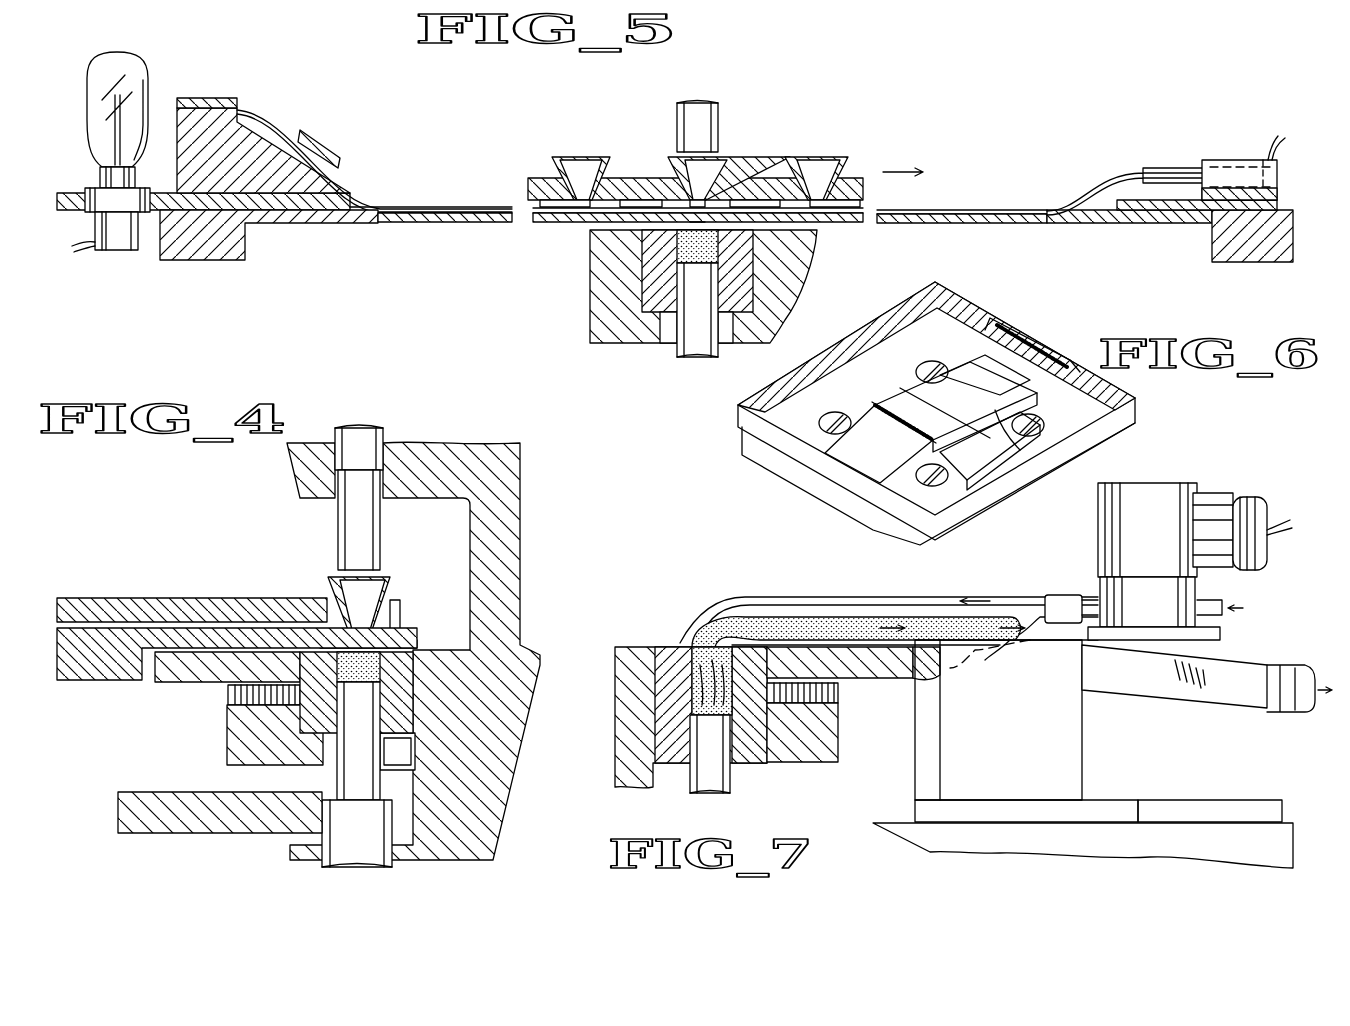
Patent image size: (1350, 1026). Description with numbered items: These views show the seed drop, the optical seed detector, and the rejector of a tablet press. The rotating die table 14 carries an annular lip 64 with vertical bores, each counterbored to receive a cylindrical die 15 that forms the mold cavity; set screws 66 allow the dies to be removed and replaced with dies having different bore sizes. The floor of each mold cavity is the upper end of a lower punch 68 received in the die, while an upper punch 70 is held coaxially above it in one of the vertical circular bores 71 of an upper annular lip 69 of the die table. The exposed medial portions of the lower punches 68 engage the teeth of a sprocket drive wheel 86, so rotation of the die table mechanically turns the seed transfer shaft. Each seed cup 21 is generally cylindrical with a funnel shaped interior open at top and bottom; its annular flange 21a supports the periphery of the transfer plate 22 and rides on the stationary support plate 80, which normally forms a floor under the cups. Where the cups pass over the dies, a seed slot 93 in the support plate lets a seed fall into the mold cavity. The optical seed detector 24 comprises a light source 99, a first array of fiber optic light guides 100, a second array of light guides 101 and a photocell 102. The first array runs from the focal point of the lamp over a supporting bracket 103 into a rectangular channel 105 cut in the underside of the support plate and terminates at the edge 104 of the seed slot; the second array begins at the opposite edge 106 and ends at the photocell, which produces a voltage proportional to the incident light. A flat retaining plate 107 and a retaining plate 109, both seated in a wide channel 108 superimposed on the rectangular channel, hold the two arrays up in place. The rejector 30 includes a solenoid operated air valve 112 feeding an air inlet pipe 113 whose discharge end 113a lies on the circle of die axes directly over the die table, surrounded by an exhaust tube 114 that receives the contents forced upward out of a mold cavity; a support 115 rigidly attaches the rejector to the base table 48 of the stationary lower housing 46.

In FIG. 5, the die table 14 is at (598, 305).
In FIG. 4, the die table 14 is at (235, 728).
In FIG. 7, the die table 14 is at (838, 748).
In FIG. 5, the cylindrical die 15 is at (645, 285).
In FIG. 4, the cylindrical die 15 is at (413, 712).
In FIG. 7, the cylindrical die 15 is at (655, 728).
In FIG. 5, the seed cup 21 is at (580, 162).
In FIG. 4, the seed cup 21 is at (386, 592).
In FIG. 5, the annular flange 21a is at (545, 210).
In FIG. 4, the annular flange 21a is at (398, 630).
In FIG. 5, the transfer plate 22 is at (632, 180).
In FIG. 4, the transfer plate 22 is at (143, 602).
In FIG. 5, the optical seed detector 24 is at (954, 149).
In FIG. 4, the optical seed detector 24 is at (334, 621).
In FIG. 7, the rejector 30 is at (727, 581).
In FIG. 7, the lower housing 46 is at (930, 852).
In FIG. 7, the base table 48 is at (1083, 844).
In FIG. 4, the annular lip 64 is at (172, 670).
In FIG. 7, the annular lip 64 is at (895, 665).
In FIG. 4, the set screws 66 is at (230, 700).
In FIG. 7, the set screws 66 is at (840, 695).
In FIG. 5, the lower punch 68 is at (677, 350).
In FIG. 4, the lower punch 68 is at (357, 774).
In FIG. 7, the lower punch 68 is at (730, 784).
In FIG. 4, the upper annular lip 69 is at (287, 458).
In FIG. 5, the upper punch 70 is at (677, 110).
In FIG. 4, the upper punch 70 is at (348, 533).
In FIG. 4, the vertical circular bores 71 is at (340, 500).
In FIG. 5, the stationary support plate 80 is at (306, 224).
In FIG. 6, the stationary support plate 80 is at (738, 413).
In FIG. 4, the stationary support plate 80 is at (67, 670).
In FIG. 4, the sprocket drive wheel 86 is at (142, 792).
In FIG. 5, the seed slot 93 is at (700, 224).
In FIG. 6, the seed slot 93 is at (967, 410).
In FIG. 4, the seed slot 93 is at (392, 612).
In FIG. 5, the light source 99 is at (133, 62).
In FIG. 5, the first array of fiber optic light guides 100 is at (350, 196).
In FIG. 6, the first array of fiber optic light guides 100 is at (928, 443).
In FIG. 4, the first array of fiber optic light guides 100 is at (362, 620).
In FIG. 5, the second array of fiber optic light guides 101 is at (1122, 175).
In FIG. 6, the second array of fiber optic light guides 101 is at (1030, 338).
In FIG. 5, the photocell 102 is at (1247, 160).
In FIG. 5, the supporting bracket 103 is at (275, 140).
In FIG. 5, the edge 104 is at (668, 226).
In FIG. 6, the edge 104 is at (900, 425).
In FIG. 5, the rectangular channel 105 is at (450, 212).
In FIG. 6, the rectangular channel 105 is at (1000, 445).
In FIG. 5, the opposite edge 106 is at (722, 224).
In FIG. 6, the opposite edge 106 is at (968, 386).
In FIG. 5, the flat retaining plate 107 is at (424, 224).
In FIG. 6, the flat retaining plate 107 is at (755, 462).
In FIG. 6, the wide channel 108 is at (968, 450).
In FIG. 4, the wide channel 108 is at (382, 655).
In FIG. 5, the retaining plate 109 is at (990, 222).
In FIG. 6, the retaining plate 109 is at (1090, 393).
In FIG. 7, the solenoid operated air valve 112 is at (1110, 553).
In FIG. 7, the air inlet pipe 113 is at (995, 602).
In FIG. 7, the discharge end 113a is at (692, 640).
In FIG. 7, the exhaust tube 114 is at (958, 667).
In FIG. 7, the support 115 is at (1098, 731).